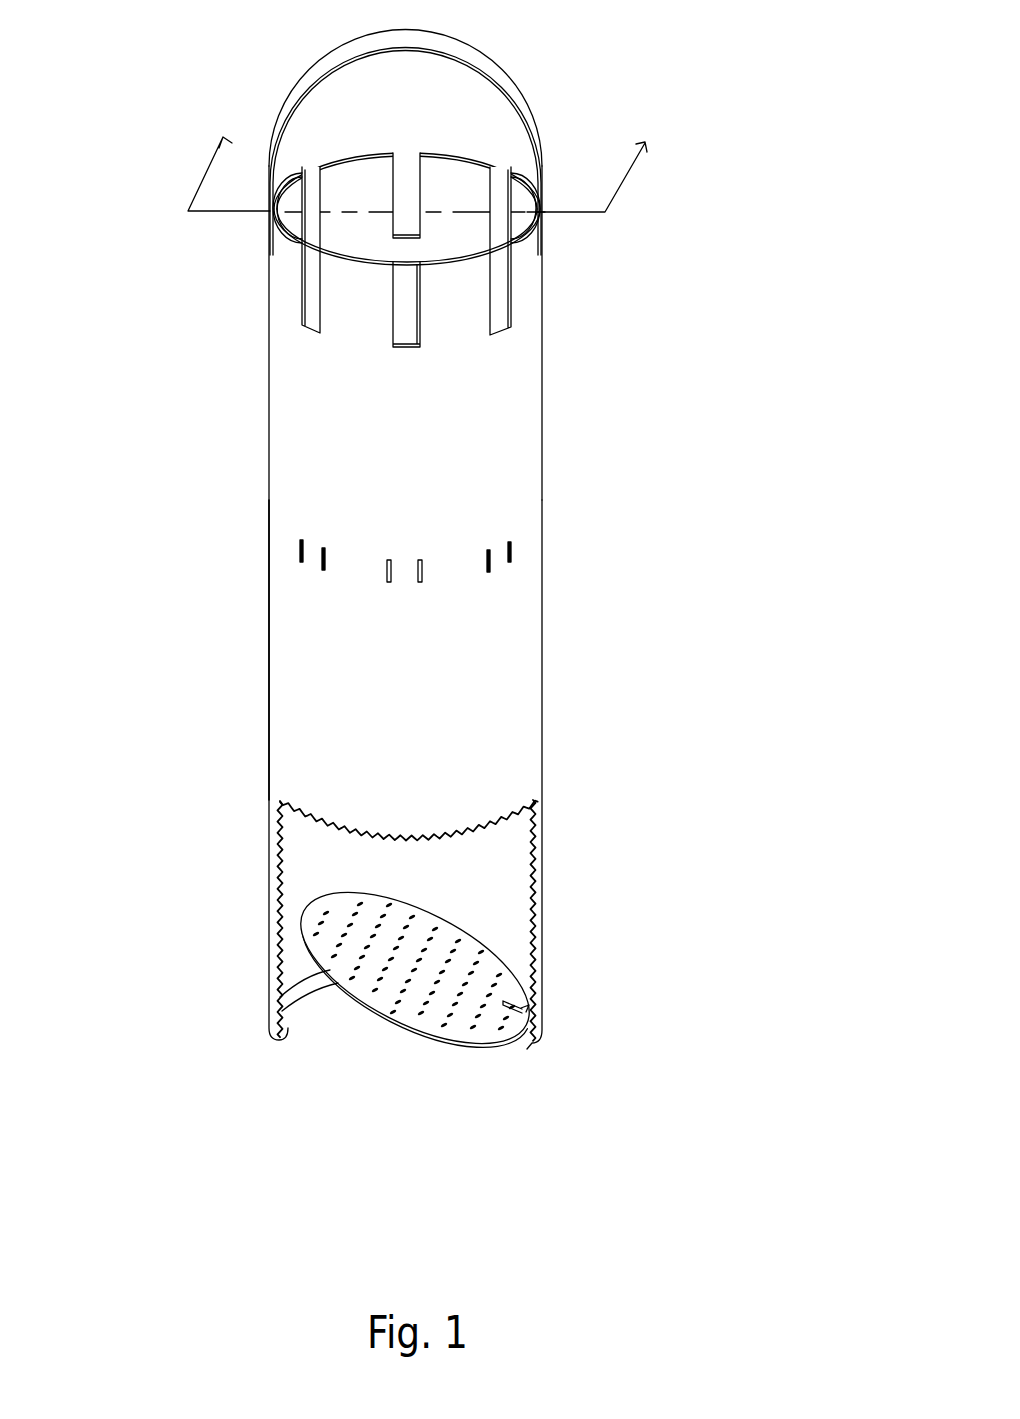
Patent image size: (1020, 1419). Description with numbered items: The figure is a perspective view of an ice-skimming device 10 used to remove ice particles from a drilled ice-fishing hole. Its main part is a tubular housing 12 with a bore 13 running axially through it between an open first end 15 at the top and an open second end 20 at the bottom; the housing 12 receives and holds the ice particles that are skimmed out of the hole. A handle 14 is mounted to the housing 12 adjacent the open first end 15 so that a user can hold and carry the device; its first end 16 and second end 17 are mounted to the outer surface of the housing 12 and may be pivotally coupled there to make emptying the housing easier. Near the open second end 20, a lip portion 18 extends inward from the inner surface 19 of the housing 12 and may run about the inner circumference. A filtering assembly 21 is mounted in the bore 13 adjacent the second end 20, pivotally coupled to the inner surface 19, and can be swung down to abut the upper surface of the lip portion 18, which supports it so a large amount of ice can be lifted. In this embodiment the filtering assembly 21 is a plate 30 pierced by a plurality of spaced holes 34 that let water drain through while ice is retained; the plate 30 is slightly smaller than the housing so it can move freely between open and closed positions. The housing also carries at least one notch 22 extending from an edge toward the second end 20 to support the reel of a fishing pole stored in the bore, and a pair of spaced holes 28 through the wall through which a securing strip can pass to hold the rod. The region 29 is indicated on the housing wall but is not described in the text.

The ice-skimming device 10 is at (757, 321).
The housing 12 is at (543, 463).
The bore 13 is at (522, 207).
The handle 14 is at (465, 52).
The open first end 15 is at (280, 247).
The first end of the handle 16 is at (268, 240).
The second end of the handle 17 is at (548, 247).
The lip portion 18 is at (295, 997).
The inner surface 19 is at (521, 893).
The open second end 20 is at (530, 1040).
The filtering assembly 21 is at (460, 1058).
The notch 22 is at (300, 328).
The spaced holes 28 is at (490, 565).
The side wall 29 is at (292, 707).
The plate 30 is at (310, 913).
The spaced holes 34 is at (477, 980).